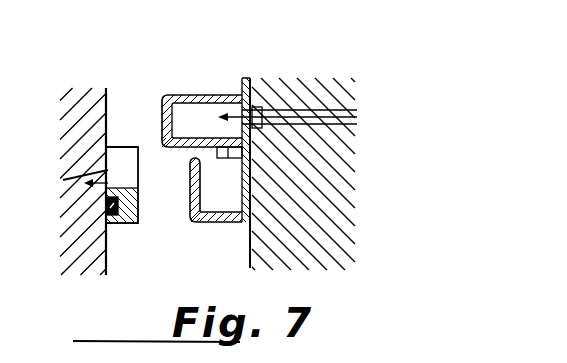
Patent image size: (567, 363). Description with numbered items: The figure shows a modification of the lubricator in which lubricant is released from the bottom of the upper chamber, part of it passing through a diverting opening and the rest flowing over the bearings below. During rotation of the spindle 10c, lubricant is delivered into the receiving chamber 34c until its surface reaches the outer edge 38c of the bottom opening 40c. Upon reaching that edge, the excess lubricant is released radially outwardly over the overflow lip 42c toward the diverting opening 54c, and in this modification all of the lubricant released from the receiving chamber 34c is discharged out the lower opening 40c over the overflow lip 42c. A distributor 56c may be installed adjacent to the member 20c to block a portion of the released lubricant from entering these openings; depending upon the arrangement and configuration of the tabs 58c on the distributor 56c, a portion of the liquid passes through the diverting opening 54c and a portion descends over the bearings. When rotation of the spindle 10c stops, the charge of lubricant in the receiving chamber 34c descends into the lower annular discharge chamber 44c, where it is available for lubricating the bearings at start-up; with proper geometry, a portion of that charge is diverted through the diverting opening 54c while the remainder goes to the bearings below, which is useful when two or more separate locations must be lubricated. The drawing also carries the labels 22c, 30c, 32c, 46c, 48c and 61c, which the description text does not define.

The spindle 10c is at (330, 213).
The member 20c is at (86, 250).
The seal assembly 22c is at (142, 88).
The bolt / fastener 30c is at (333, 116).
The cup-shaped retainer 32c is at (166, 96).
The receiving chamber 34c is at (184, 112).
The outer edge 38c is at (232, 160).
The bottom opening 40c is at (250, 147).
The overflow lip 42c is at (217, 156).
The lower annular discharge chamber 44c is at (201, 218).
The retainer corner 46c is at (236, 224).
The lower retainer side wall 48c is at (191, 160).
The diverting opening 54c is at (73, 174).
The distributor 56c is at (128, 225).
The tabs 58c is at (118, 151).
The gap 61c is at (153, 168).